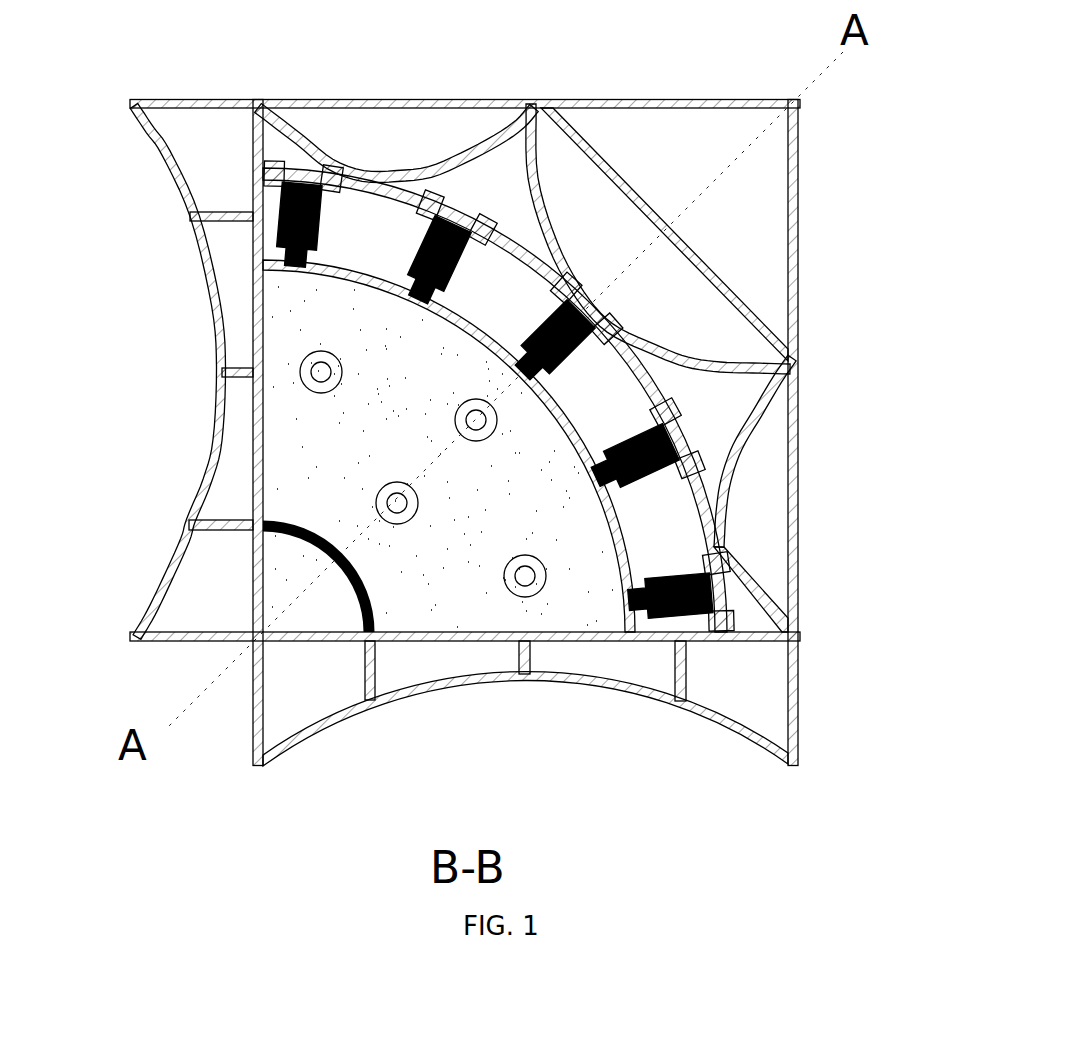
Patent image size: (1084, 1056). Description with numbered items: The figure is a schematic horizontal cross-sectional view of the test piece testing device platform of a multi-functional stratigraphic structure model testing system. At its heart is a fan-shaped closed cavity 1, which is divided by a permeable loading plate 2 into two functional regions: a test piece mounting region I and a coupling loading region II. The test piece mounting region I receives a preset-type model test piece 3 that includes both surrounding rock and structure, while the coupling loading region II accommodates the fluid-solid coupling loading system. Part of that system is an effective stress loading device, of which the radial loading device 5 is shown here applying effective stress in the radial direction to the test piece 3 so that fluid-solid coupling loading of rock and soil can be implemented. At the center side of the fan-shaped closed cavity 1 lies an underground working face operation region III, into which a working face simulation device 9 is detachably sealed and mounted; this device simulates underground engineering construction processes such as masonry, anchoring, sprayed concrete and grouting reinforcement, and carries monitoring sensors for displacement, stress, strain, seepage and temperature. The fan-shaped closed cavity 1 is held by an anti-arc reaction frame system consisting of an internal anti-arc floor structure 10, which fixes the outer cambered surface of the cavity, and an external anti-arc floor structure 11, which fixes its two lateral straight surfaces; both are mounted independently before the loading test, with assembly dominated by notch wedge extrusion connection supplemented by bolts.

The fan-shaped closed cavity 1 is at (310, 305).
The permeable loading plate 2 is at (548, 394).
The test piece 3 is at (320, 433).
The radial loading device 5 is at (280, 219).
The working face simulation device 9 is at (300, 540).
The internal anti-arc floor structure 10 is at (597, 297).
The external anti-arc floor structure 11 is at (398, 742).
The test piece mounting region I is at (668, 487).
The coupling loading region II is at (497, 546).
The underground working face operation region III is at (323, 605).